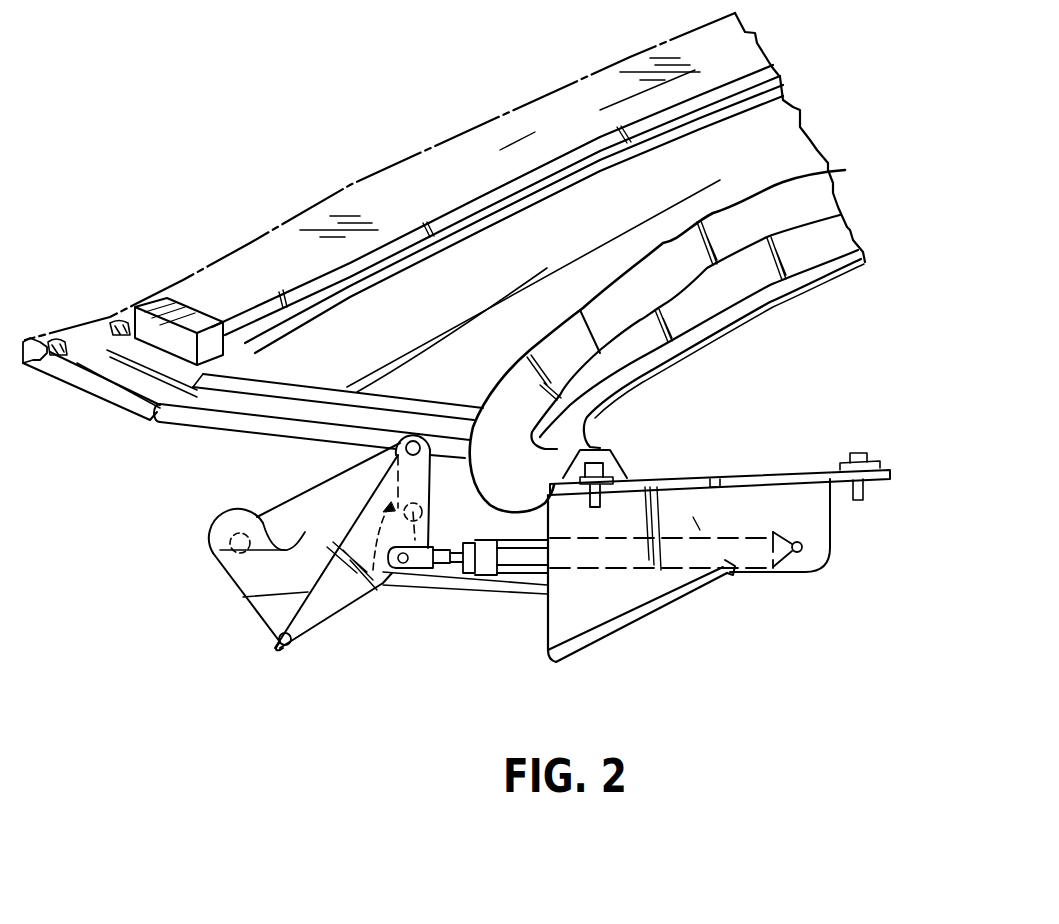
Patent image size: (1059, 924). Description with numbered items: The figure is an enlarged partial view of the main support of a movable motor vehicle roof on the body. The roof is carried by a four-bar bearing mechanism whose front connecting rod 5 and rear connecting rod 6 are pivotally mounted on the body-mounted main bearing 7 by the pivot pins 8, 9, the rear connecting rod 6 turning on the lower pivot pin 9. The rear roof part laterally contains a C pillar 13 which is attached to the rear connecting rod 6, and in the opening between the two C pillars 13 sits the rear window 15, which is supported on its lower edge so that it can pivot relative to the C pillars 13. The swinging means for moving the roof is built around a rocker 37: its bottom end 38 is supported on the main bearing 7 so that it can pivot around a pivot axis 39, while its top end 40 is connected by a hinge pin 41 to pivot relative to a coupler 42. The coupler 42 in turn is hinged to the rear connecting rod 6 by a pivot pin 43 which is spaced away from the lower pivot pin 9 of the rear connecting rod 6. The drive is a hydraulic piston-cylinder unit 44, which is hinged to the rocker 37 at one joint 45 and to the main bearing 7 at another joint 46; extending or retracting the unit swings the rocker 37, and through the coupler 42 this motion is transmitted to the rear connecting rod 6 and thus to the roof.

The rear window 15 is at (350, 185).
The C pillar 13 is at (593, 220).
The front connecting rod 5 is at (658, 273).
The rear connecting rod 6 is at (737, 275).
The pivot pin 8 is at (598, 458).
The main bearing 7 is at (697, 513).
The joint 46 is at (797, 553).
The hydraulic piston-cylinder unit 44 is at (517, 585).
The pivot pin 43 is at (433, 572).
The joint 45 is at (403, 563).
The hinge pin 41 is at (398, 452).
The top end 40 is at (362, 472).
The coupler 42 is at (375, 590).
The rocker 37 is at (337, 583).
The bottom end 38 is at (303, 633).
The pivot axis 39 is at (280, 653).
The pivot pin 9 is at (213, 547).